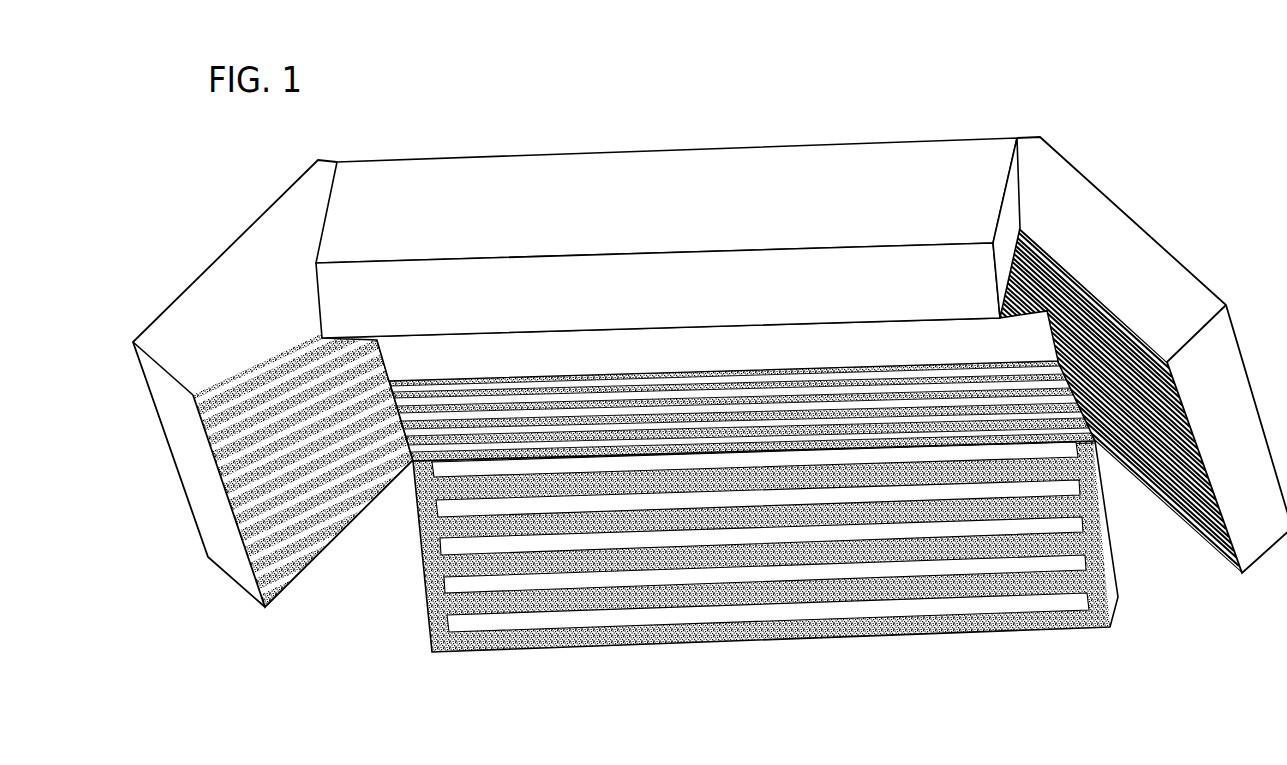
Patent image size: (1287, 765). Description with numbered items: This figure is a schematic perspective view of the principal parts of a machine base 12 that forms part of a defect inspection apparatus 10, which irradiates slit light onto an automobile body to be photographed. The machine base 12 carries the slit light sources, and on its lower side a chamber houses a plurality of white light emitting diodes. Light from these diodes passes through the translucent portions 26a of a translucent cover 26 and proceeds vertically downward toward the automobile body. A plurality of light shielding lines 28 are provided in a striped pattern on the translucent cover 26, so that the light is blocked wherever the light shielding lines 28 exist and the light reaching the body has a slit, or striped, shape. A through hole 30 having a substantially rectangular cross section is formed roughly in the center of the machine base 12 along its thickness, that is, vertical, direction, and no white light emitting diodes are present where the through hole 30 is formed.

The defect inspection apparatus 10 is at (400, 114).
The machine base 12 is at (871, 141).
The translucent cover 26 is at (710, 415).
The translucent portions 26a is at (358, 420).
The light shielding lines 28 is at (318, 493).
The through hole 30 is at (610, 352).